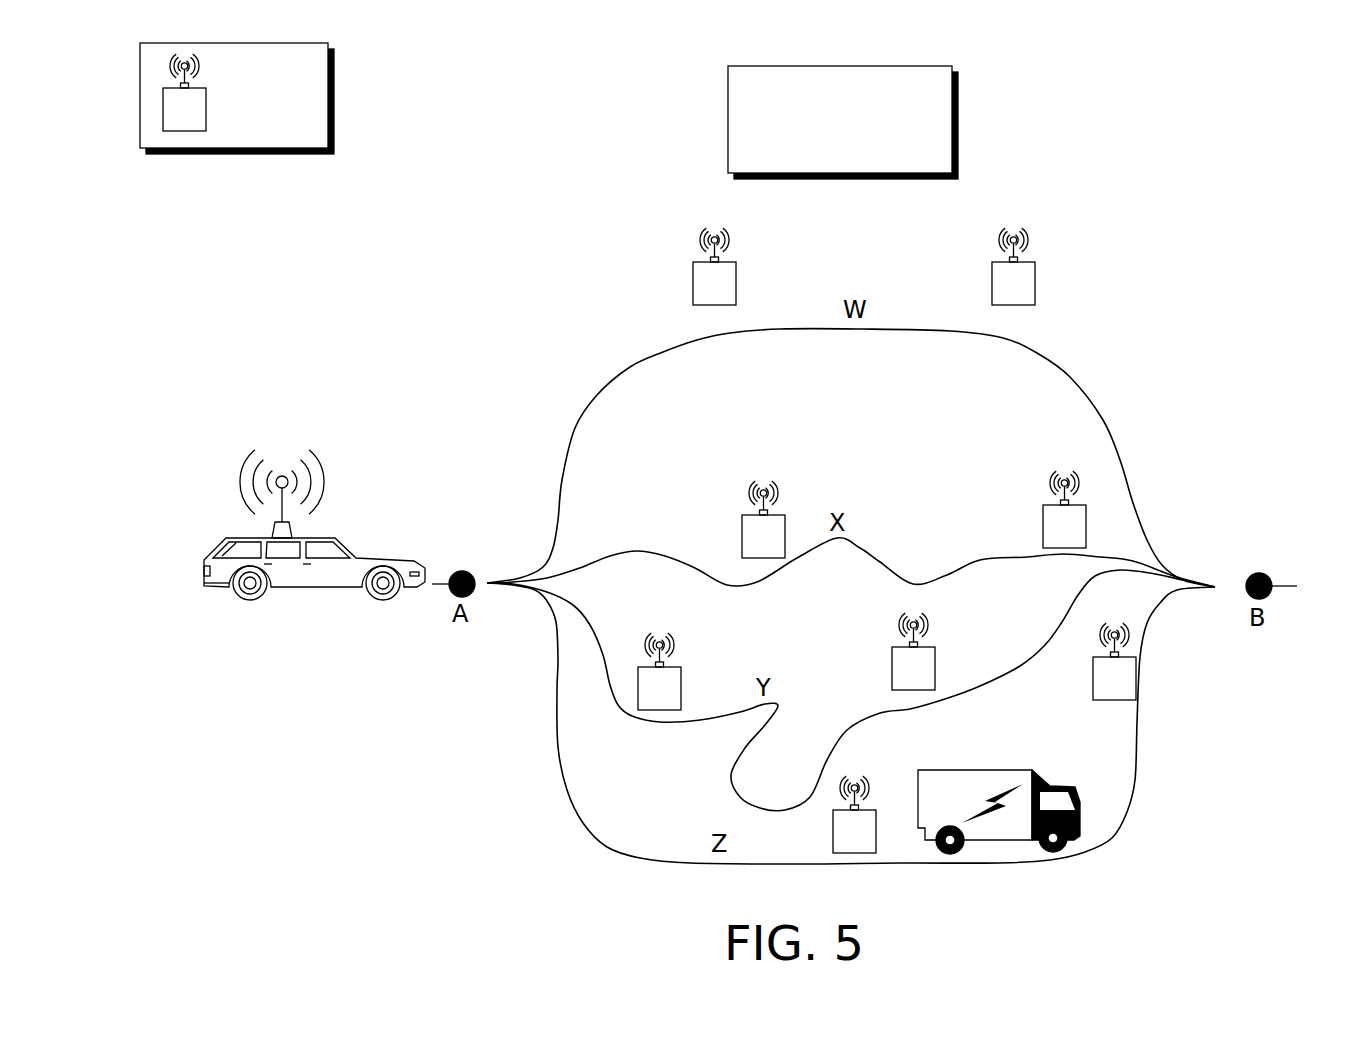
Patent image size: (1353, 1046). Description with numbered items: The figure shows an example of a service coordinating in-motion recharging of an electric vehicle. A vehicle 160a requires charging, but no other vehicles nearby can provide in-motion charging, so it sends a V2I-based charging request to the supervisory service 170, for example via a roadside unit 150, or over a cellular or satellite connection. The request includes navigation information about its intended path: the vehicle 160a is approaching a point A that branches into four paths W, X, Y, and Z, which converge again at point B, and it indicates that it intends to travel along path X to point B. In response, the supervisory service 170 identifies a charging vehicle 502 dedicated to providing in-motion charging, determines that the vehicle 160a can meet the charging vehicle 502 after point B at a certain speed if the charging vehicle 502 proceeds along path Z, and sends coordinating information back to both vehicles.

The roadside unit (RSU) 150 is at (254, 125).
The supervisory service 170 is at (821, 161).
The vehicle 160a is at (303, 595).
The charging vehicle 502 is at (978, 768).